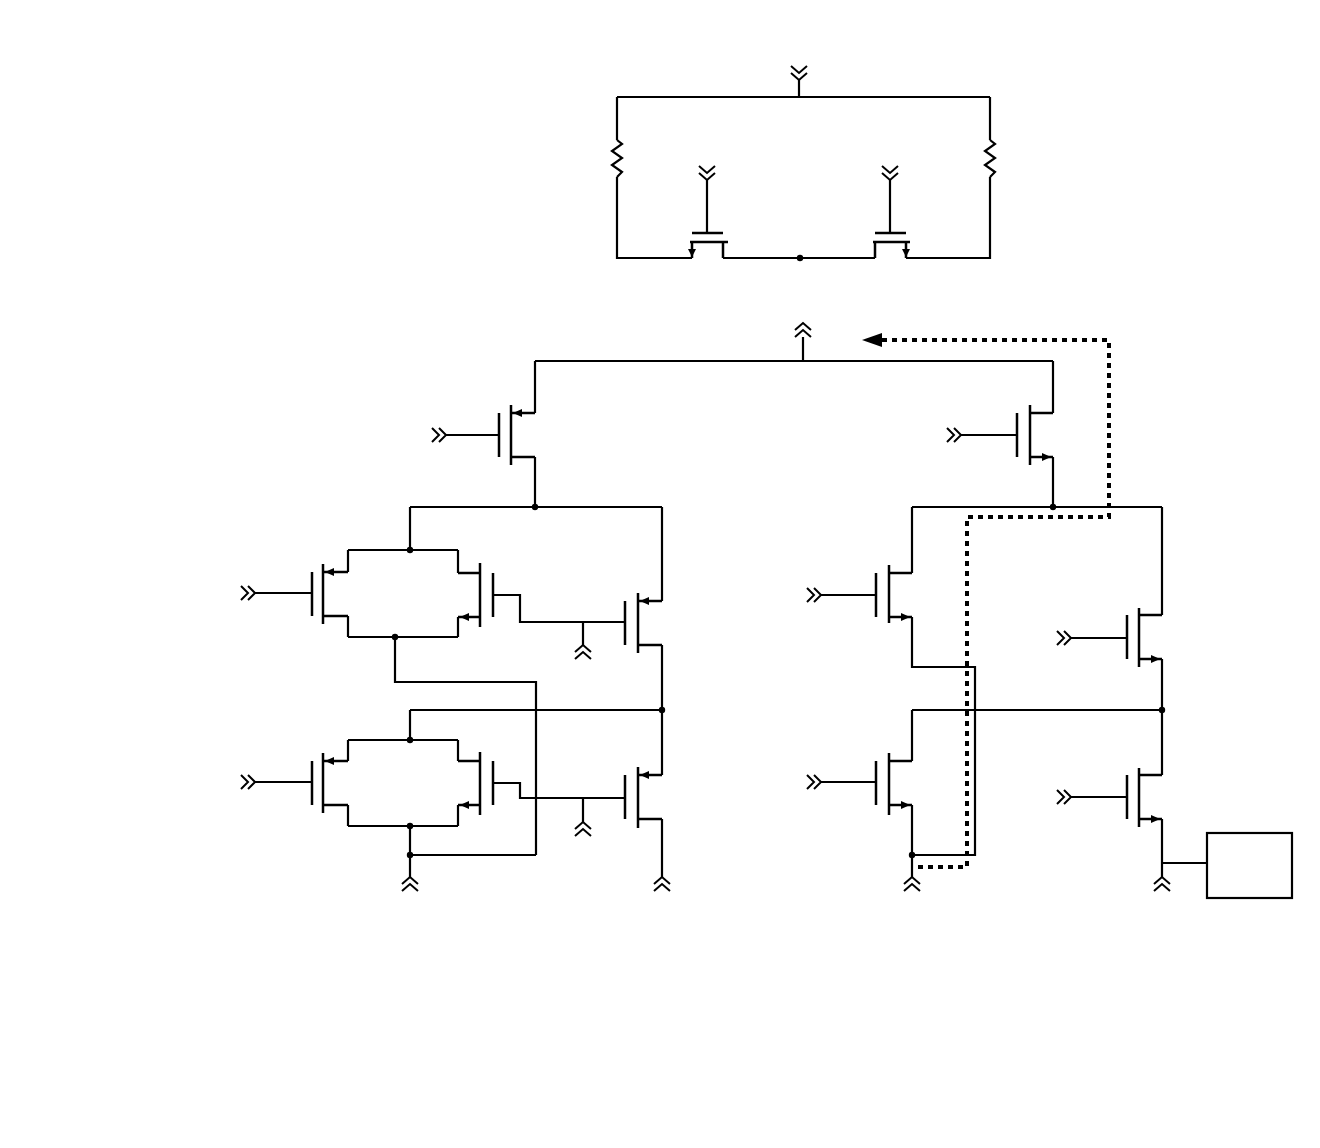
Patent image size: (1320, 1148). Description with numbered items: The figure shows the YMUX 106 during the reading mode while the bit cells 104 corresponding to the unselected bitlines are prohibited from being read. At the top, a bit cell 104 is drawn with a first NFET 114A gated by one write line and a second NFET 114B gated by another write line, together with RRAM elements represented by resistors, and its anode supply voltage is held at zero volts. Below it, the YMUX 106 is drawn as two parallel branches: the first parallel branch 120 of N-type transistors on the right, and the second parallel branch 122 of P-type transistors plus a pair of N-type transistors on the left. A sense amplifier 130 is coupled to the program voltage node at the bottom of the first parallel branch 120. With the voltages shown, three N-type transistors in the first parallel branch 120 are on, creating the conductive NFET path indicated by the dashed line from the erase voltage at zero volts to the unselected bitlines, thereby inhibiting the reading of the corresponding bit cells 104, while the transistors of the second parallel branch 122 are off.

The YMUX 106 is at (314, 259).
The bit cell 104 is at (600, 258).
The first NFET 114A is at (687, 229).
The second NFET 114B is at (940, 215).
The second parallel branch 122 is at (420, 378).
The first parallel branch 120 is at (1122, 359).
The sense amplifier 130 is at (1249, 865).